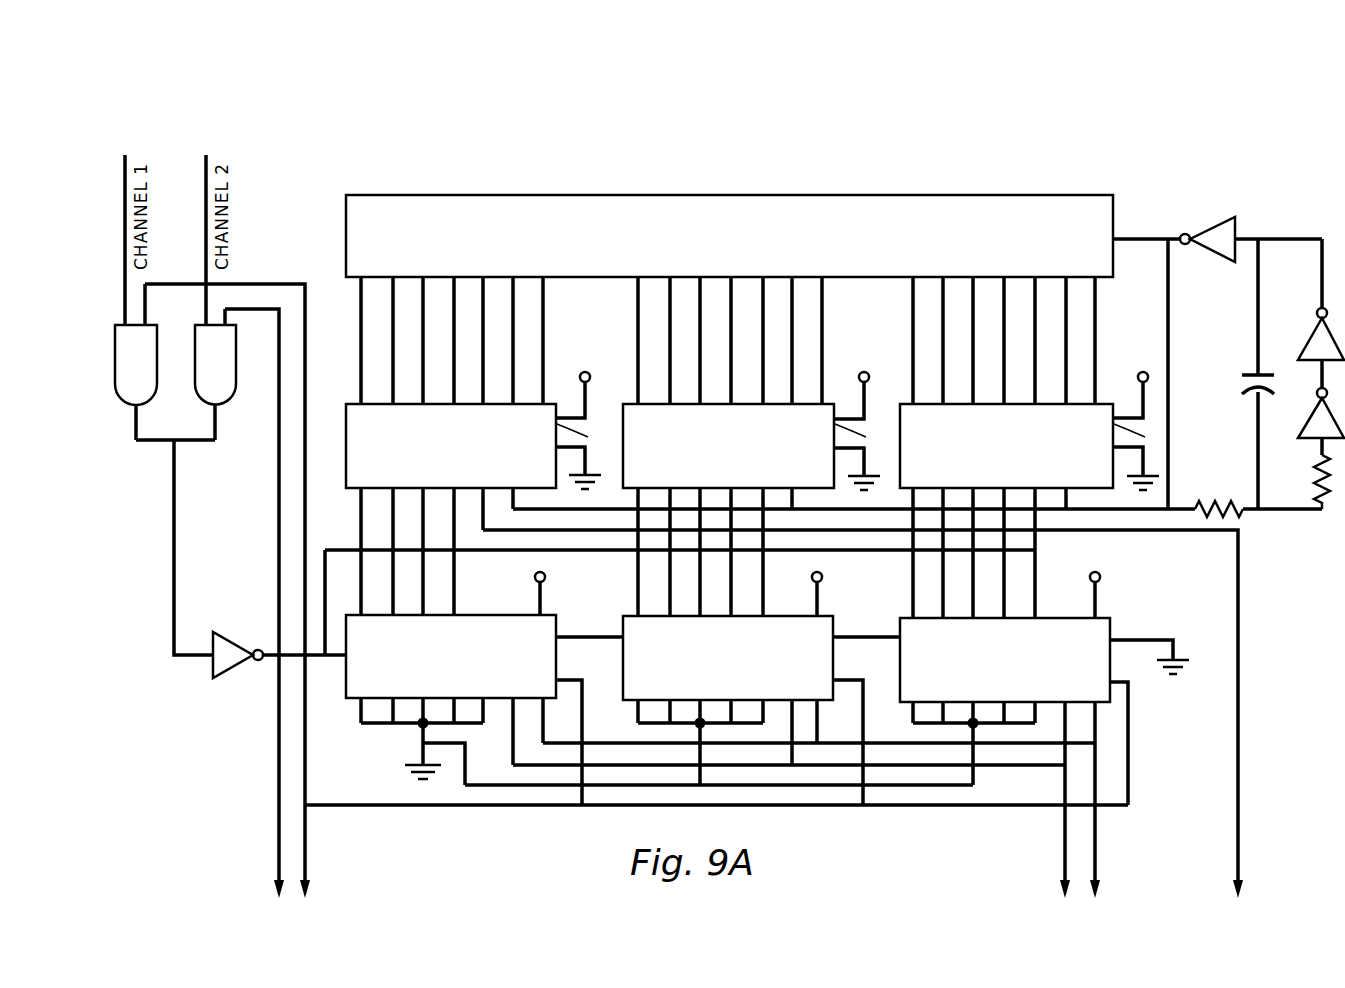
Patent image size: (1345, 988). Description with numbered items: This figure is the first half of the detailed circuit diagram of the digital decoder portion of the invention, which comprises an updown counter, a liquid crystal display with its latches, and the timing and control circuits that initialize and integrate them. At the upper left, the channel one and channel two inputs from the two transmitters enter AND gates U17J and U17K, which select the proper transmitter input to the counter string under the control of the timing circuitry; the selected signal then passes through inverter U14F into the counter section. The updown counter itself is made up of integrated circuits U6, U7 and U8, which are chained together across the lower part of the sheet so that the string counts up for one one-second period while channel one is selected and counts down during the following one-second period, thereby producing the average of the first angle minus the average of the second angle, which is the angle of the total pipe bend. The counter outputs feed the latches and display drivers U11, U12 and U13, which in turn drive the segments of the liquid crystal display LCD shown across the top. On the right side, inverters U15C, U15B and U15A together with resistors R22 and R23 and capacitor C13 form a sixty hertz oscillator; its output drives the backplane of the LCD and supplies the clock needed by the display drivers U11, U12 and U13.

The liquid crystal display LCD is at (729, 236).
The AND gate U17J is at (149, 362).
The AND gate U17K is at (232, 374).
The inverter U14F is at (259, 671).
The liquid crystal display driver U11 is at (479, 446).
The liquid crystal display driver U12 is at (757, 446).
The liquid crystal display driver U13 is at (1035, 447).
The updown counter integrated circuit U6 is at (484, 684).
The updown counter integrated circuit U7 is at (761, 684).
The updown counter integrated circuit U8 is at (1044, 731).
The inverter of 60 Hz oscillator U15C is at (1217, 224).
The inverter of 60 Hz oscillator U15B is at (1302, 341).
The inverter of 60 Hz oscillator U15A is at (1302, 427).
The capacitor C13 is at (1236, 368).
The resistor R22 is at (1214, 498).
The resistor R23 is at (1298, 482).